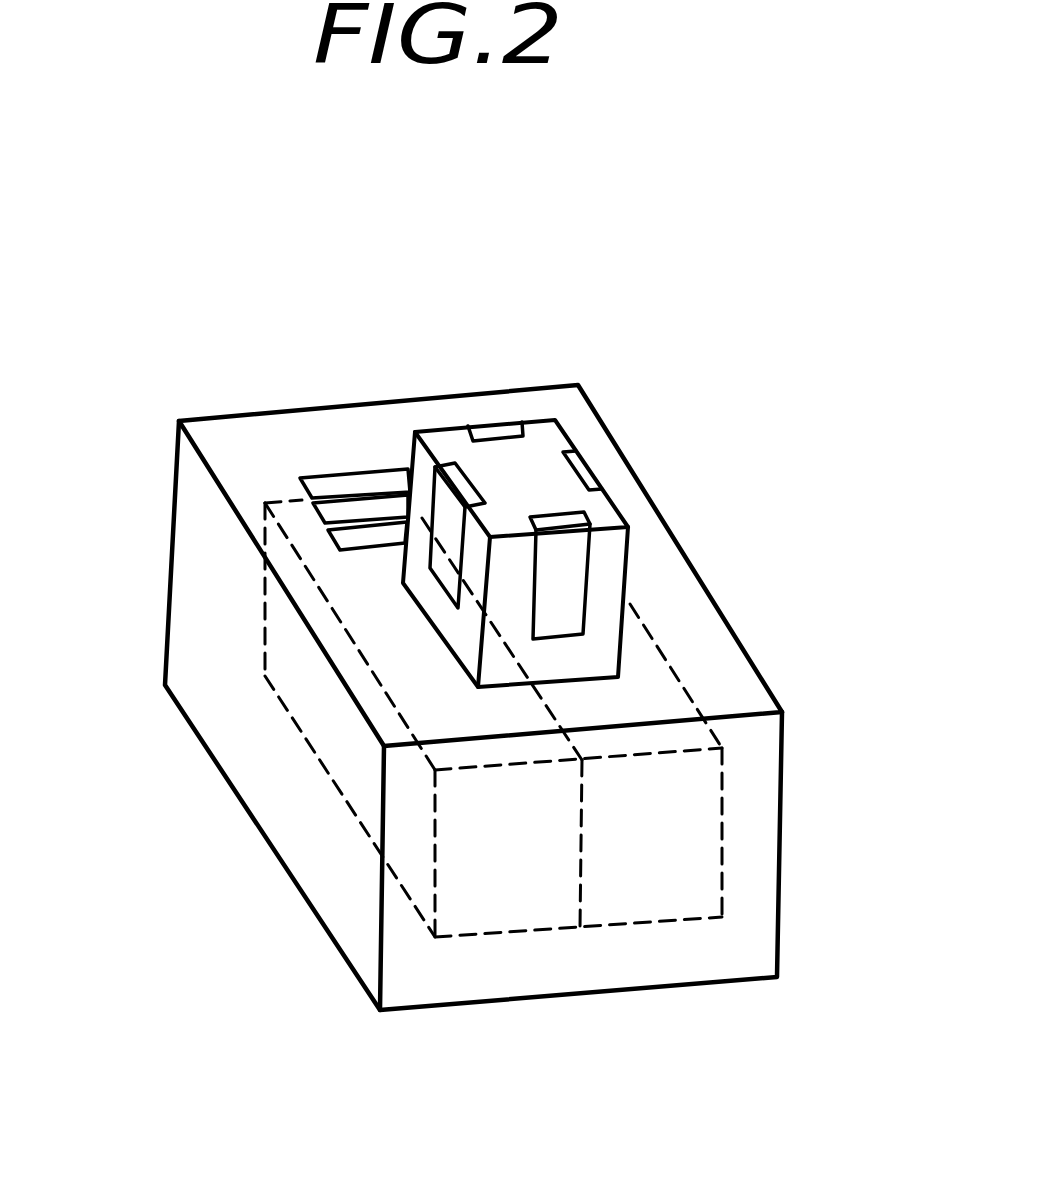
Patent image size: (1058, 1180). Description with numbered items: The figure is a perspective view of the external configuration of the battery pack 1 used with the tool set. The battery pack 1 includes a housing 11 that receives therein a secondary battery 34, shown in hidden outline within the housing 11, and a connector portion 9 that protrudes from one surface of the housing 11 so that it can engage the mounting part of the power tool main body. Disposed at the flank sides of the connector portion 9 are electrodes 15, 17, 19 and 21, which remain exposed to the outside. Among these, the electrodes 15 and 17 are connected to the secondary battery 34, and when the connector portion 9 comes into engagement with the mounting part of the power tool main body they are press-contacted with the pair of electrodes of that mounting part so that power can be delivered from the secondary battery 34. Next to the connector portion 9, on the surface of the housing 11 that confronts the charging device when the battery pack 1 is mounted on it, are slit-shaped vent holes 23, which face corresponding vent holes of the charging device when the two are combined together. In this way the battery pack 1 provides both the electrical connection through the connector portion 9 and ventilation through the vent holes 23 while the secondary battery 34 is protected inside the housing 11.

The battery pack 1 is at (163, 998).
The connector portion 9 is at (551, 430).
The housing 11 is at (208, 628).
The electrode 15 is at (572, 563).
The electrode 17 is at (452, 535).
The electrode 19 is at (502, 421).
The electrode 21 is at (592, 462).
The vent holes 23 is at (393, 547).
The secondary battery 34 is at (721, 832).